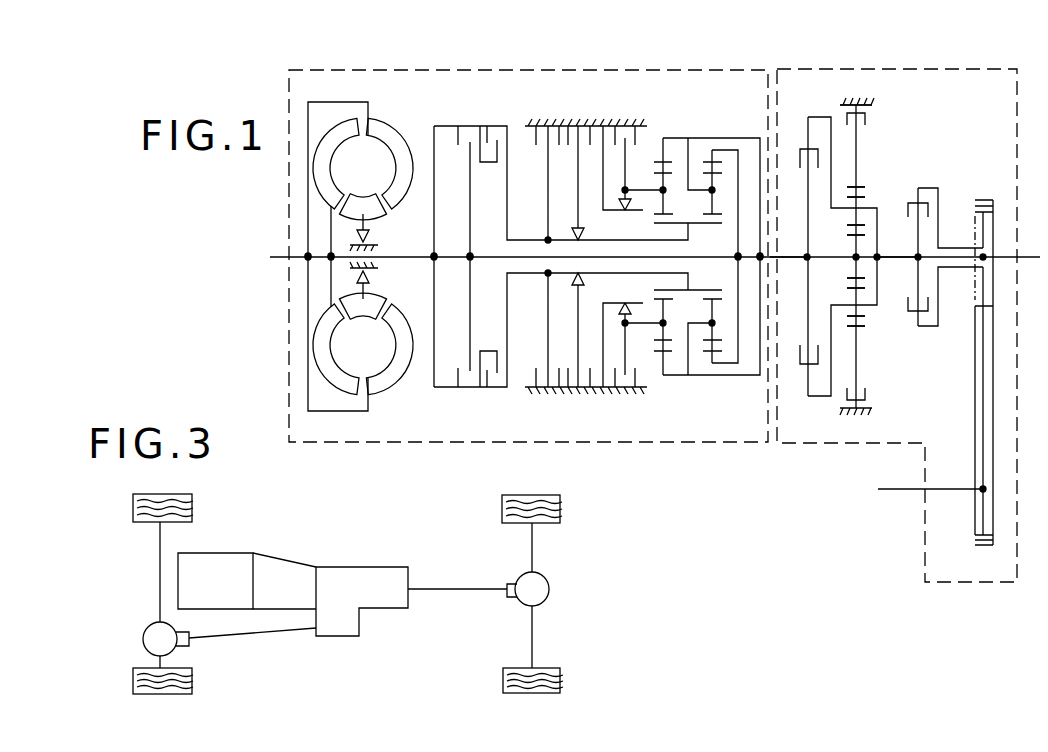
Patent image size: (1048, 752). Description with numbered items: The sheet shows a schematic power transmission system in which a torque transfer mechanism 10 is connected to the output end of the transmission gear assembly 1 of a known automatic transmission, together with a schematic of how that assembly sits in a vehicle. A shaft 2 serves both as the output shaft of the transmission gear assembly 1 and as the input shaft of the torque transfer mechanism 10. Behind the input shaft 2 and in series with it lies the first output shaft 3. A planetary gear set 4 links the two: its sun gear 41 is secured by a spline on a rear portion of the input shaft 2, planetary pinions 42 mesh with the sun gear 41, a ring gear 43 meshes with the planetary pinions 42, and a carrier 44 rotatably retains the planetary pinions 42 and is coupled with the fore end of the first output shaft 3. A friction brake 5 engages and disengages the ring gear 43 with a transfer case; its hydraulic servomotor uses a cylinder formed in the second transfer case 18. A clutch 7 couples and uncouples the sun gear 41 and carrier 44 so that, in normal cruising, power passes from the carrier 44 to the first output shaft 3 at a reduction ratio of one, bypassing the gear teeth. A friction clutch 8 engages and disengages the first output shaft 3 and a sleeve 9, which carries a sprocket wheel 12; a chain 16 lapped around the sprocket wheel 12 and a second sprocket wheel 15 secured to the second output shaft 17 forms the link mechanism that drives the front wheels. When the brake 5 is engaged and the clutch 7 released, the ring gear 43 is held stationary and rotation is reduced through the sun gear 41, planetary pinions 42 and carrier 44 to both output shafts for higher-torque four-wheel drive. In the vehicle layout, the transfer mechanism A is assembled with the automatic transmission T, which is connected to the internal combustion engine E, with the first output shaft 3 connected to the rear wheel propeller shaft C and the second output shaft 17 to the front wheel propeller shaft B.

In FIG. 1, the transmission gear assembly 1 is at (647, 68).
In FIG. 1, the input shaft 2 is at (792, 255).
In FIG. 1, the first output shaft 3 is at (893, 256).
In FIG. 1, the planetary gear set 4 is at (879, 177).
In FIG. 1, the friction brake 5 is at (867, 113).
In FIG. 1, the clutch 7 is at (803, 148).
In FIG. 1, the friction clutch 8 is at (912, 201).
In FIG. 1, the sleeve 9 is at (950, 248).
In FIG. 1, the torque transfer mechanism 10 is at (810, 68).
In FIG. 1, the sprocket wheel 12 is at (986, 199).
In FIG. 1, the sprocket wheel 15 is at (980, 546).
In FIG. 1, the chain 16 is at (974, 347).
In FIG. 1, the second output shaft 17 is at (950, 488).
In FIG. 1, the second transfer case 18 is at (857, 99).
In FIG. 1, the sun gear 41 is at (851, 237).
In FIG. 1, the planetary pinions 42 is at (859, 222).
In FIG. 1, the ring gear 43 is at (858, 186).
In FIG. 1, the carrier 44 is at (829, 214).
In FIG. 3, the transfer mechanism A is at (341, 628).
In FIG. 3, the front wheel propeller shaft B is at (259, 637).
In FIG. 3, the rear wheel propeller shaft C is at (456, 592).
In FIG. 3, the internal combustion engine E is at (219, 598).
In FIG. 3, the automatic transmission T is at (286, 600).